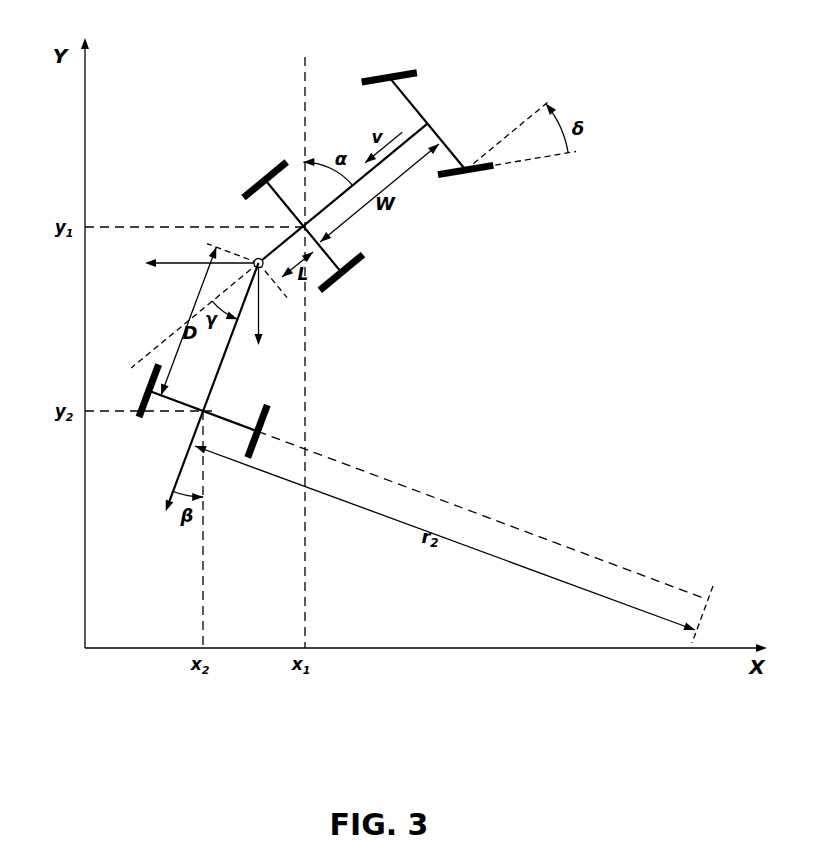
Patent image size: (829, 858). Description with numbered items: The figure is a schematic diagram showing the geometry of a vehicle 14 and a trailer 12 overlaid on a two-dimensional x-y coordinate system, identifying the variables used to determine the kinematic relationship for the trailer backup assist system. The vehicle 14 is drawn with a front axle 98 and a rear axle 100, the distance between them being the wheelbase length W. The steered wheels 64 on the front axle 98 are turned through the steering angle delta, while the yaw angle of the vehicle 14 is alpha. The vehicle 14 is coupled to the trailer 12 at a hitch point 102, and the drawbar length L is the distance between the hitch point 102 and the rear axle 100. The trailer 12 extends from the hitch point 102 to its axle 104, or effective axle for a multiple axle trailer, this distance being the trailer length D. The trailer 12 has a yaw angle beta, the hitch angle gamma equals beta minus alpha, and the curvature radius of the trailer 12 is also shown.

The trailer 12 is at (268, 387).
The vehicle 14 is at (335, 150).
The steered wheels 64 is at (387, 72).
The front axle 98 is at (415, 98).
The rear axle 100 is at (283, 208).
The hitch point 102 is at (255, 258).
The axle 104 is at (228, 417).